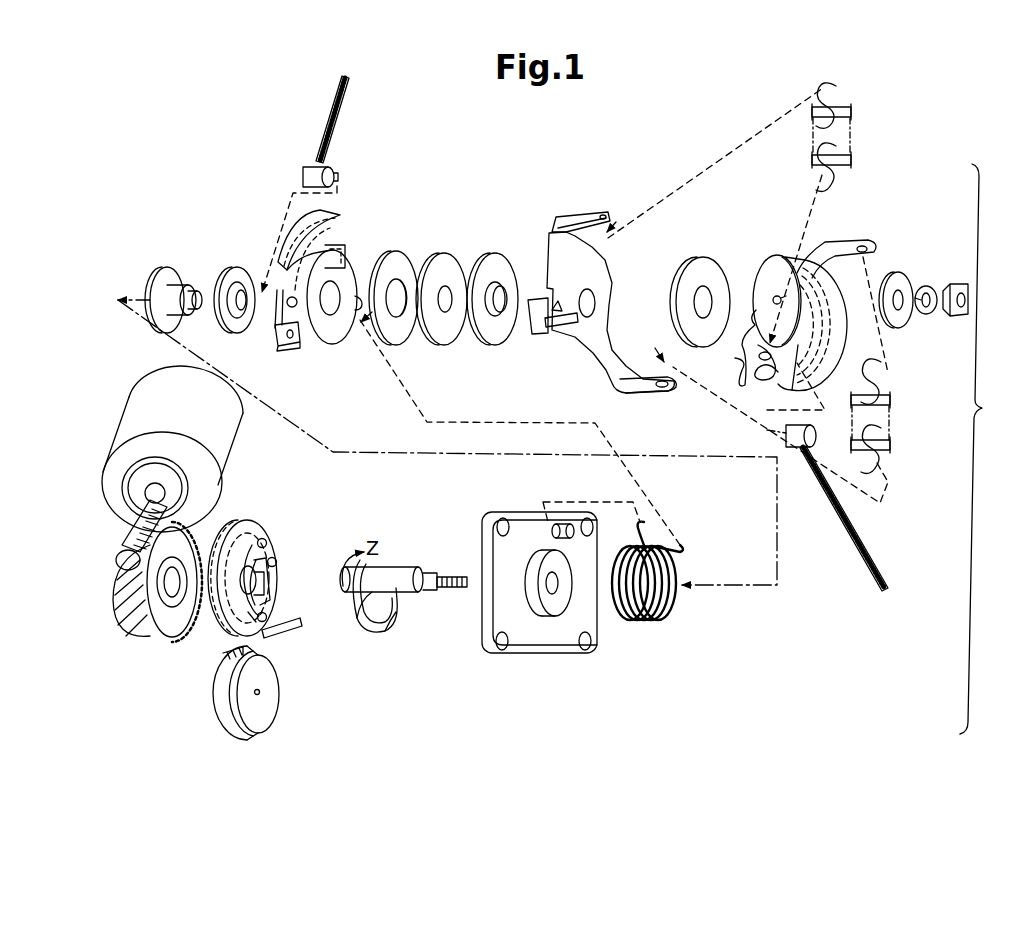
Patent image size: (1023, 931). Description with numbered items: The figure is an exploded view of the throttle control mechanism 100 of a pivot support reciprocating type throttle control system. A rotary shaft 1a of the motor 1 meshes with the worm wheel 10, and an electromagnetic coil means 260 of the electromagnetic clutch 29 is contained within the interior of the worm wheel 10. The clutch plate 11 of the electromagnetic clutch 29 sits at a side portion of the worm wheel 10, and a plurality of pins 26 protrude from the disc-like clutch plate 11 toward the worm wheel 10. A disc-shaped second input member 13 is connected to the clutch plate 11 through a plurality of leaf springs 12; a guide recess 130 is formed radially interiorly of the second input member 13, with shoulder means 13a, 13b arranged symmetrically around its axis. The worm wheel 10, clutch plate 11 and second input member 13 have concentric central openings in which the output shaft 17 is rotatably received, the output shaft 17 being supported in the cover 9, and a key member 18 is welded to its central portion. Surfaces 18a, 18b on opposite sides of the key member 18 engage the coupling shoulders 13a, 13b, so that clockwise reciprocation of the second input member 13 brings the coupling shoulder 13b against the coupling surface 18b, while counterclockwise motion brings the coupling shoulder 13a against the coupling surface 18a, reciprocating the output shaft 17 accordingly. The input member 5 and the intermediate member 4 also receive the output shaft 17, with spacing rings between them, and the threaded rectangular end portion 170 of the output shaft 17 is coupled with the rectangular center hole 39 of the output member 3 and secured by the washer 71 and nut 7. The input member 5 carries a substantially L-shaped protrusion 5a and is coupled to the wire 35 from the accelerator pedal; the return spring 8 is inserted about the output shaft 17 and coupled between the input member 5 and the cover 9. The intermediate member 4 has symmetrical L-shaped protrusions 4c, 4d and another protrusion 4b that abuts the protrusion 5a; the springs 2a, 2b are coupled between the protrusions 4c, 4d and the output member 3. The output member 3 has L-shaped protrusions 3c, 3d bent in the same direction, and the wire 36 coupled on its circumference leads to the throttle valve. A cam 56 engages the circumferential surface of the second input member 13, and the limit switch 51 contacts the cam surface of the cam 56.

The motor 1 is at (150, 439).
The rotary shaft 1a is at (150, 490).
The electromagnetic clutch 29 is at (140, 546).
The worm wheel 10 is at (139, 606).
The electromagnetic coil means 260 is at (173, 620).
The pins 26 is at (198, 560).
The clutch plate 11 is at (263, 565).
The leaf springs 12 is at (247, 547).
The second input member 13 is at (262, 527).
The coupling shoulder 13a is at (266, 551).
The guide recess 130 is at (267, 587).
The coupling shoulder 13b is at (267, 617).
The output shaft 17 is at (403, 556).
The rectangular end portion 170 is at (455, 579).
The key member 18 is at (403, 620).
The coupling surface 18a is at (370, 625).
The coupling surface 18b is at (398, 620).
The cover 9 is at (545, 648).
The return spring 8 is at (639, 620).
The limit switch 51 is at (290, 648).
The cam 56 is at (268, 708).
The input member 5 is at (347, 226).
The protrusion 5a is at (292, 345).
The wire 35 is at (338, 124).
The wire 36 is at (870, 552).
The intermediate member 4 is at (595, 296).
The protrusion 4b is at (542, 325).
The L-shaped protrusion 4c is at (583, 212).
The L-shaped protrusion 4d is at (647, 382).
The output member 3 is at (802, 292).
The rectangular center hole 39 is at (772, 300).
The L-shaped protrusion 3c is at (747, 357).
The L-shaped protrusion 3d is at (868, 235).
The spring 2a is at (843, 140).
The spring 2b is at (890, 412).
The washer 71 is at (923, 290).
The nut 7 is at (958, 287).
The throttle control mechanism 100 is at (986, 449).